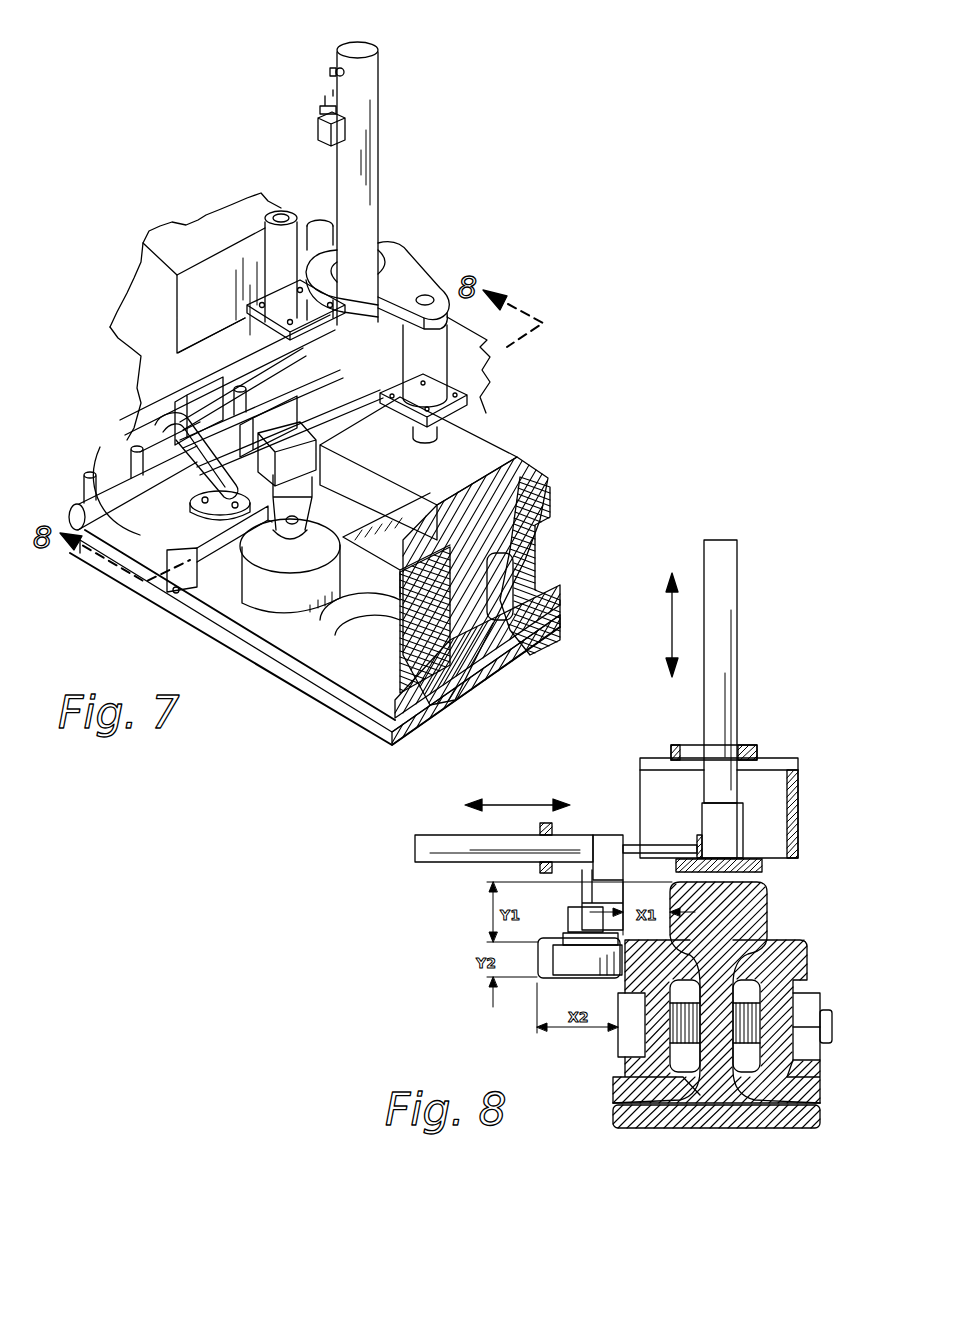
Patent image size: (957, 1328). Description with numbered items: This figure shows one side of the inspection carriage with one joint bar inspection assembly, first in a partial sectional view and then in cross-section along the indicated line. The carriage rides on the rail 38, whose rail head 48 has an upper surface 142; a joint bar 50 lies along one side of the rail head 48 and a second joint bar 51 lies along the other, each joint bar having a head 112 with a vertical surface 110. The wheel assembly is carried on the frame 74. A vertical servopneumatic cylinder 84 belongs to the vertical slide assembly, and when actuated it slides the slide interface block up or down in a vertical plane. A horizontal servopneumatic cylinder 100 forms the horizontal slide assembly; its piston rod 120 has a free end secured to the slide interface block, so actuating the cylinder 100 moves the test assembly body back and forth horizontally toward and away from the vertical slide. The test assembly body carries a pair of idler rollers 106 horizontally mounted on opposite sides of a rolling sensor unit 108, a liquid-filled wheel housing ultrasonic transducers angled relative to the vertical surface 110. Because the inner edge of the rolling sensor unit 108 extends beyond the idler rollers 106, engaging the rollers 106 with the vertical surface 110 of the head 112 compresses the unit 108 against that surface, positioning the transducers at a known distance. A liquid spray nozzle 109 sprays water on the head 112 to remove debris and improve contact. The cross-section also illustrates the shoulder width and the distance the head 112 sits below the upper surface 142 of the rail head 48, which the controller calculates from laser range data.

In FIG. 7, the rail 38 is at (520, 588).
In FIG. 8, the rail 38 is at (613, 1124).
In FIG. 7, the rail head 48 is at (520, 487).
In FIG. 8, the rail head 48 is at (757, 913).
In FIG. 7, the joint bar 50 is at (425, 700).
In FIG. 8, the joint bar 50 is at (613, 1093).
In FIG. 7, the joint bar 51 is at (540, 540).
In FIG. 8, the joint bar 51 is at (800, 1097).
In FIG. 7, the frame 74 is at (220, 223).
In FIG. 8, the frame 74 is at (798, 800).
In FIG. 7, the vertical servopneumatic cylinder 84 is at (364, 155).
In FIG. 8, the vertical servopneumatic cylinder 84 is at (730, 602).
In FIG. 7, the horizontal servopneumatic cylinder 100 is at (123, 483).
In FIG. 8, the horizontal servopneumatic cylinder 100 is at (445, 863).
In FIG. 7, the idler rollers 106 is at (103, 447).
In FIG. 8, the idler rollers 106 is at (573, 967).
In FIG. 7, the rolling sensor unit (RSU) 108 is at (215, 590).
In FIG. 8, the rolling sensor unit (RSU) 108 is at (537, 966).
In FIG. 7, the liquid spray nozzle 109 is at (160, 580).
In FIG. 7, the vertical surface 110 is at (350, 725).
In FIG. 7, the head 112 is at (480, 683).
In FIG. 8, the piston rod 120 is at (633, 838).
In FIG. 7, the upper surface 142 is at (480, 450).